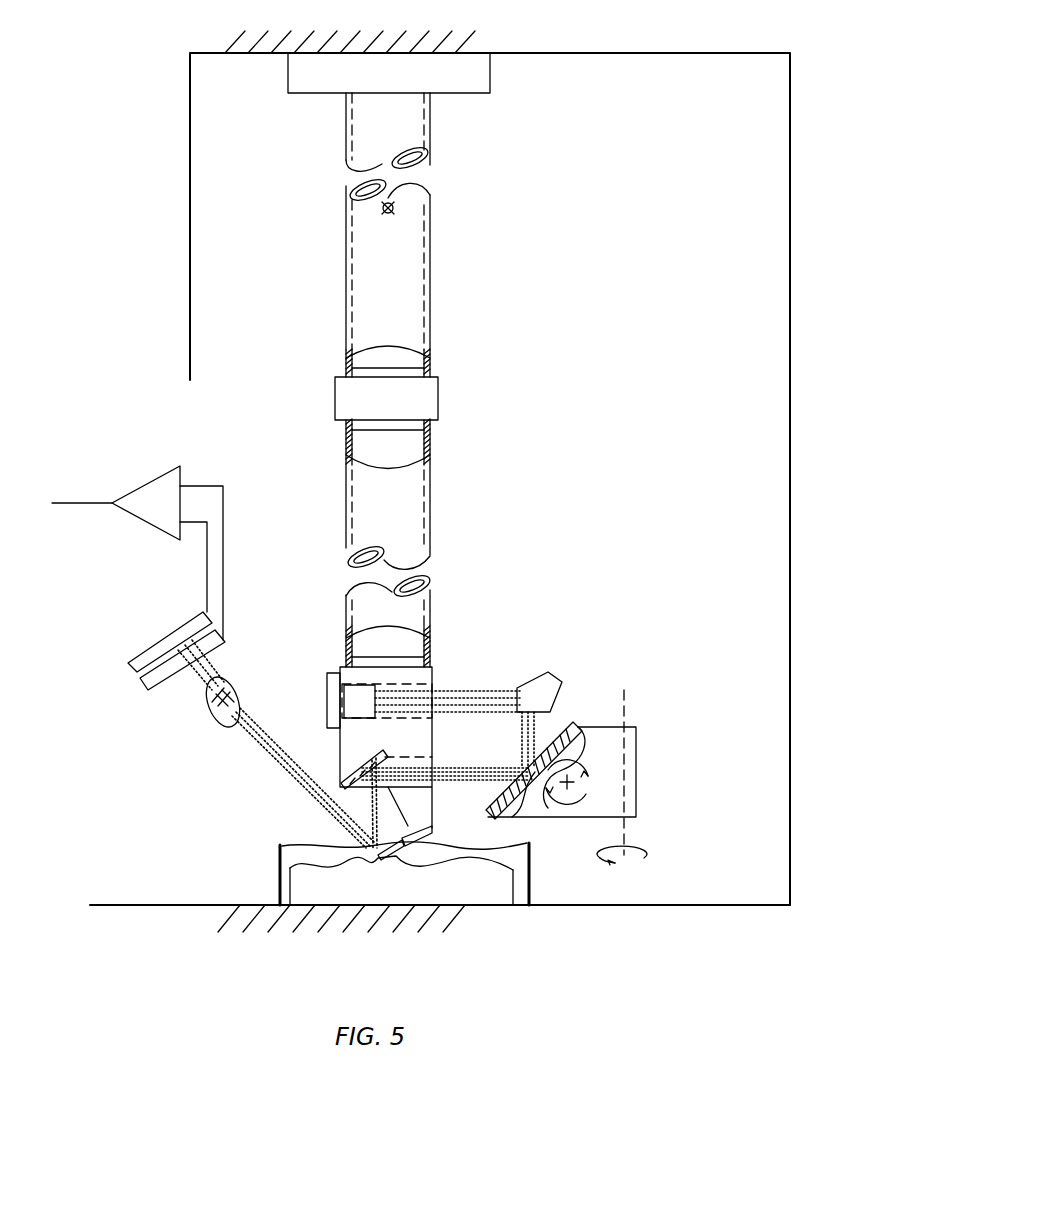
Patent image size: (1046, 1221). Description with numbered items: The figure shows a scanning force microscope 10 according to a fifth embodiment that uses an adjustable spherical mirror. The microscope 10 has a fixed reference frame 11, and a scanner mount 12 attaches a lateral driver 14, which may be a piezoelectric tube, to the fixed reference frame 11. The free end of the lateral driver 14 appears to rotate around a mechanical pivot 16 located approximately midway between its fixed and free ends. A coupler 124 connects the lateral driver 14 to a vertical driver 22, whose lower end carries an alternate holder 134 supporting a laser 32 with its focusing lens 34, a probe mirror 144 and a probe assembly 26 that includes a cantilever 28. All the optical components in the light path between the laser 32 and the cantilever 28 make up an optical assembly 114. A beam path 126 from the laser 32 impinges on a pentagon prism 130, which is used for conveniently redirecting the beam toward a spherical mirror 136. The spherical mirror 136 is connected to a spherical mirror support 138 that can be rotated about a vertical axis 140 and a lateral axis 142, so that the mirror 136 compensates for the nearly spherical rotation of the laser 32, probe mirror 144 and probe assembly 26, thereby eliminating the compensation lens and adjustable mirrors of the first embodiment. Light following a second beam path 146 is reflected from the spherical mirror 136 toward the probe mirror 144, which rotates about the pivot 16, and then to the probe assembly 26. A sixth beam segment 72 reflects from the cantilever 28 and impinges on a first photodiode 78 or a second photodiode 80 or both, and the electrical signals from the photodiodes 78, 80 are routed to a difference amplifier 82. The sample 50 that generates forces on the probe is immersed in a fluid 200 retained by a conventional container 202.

The microscope 10 is at (815, 103).
The fixed reference frame 11 is at (630, 53).
The scanner mount 12 is at (465, 71).
The lateral driver 14 is at (400, 280).
The mechanical pivot 16 is at (395, 205).
The vertical driver 22 is at (375, 511).
The probe assembly 26 is at (430, 838).
The cantilever 28 is at (378, 855).
The laser 32 is at (330, 690).
The focusing lens 34 is at (378, 693).
The sample 50 is at (505, 887).
The sixth beam segment 72 is at (205, 712).
The first photodiode 78 is at (135, 660).
The second photodiode 80 is at (148, 685).
The difference amplifier 82 is at (150, 493).
The optical assembly 114 is at (655, 700).
The coupler 124 is at (425, 398).
The beam path 126 is at (455, 703).
The pentagon prism 130 is at (548, 672).
The alternate holder 134 is at (427, 678).
The spherical mirror 136 is at (575, 727).
The spherical mirror support 138 is at (632, 745).
The vertical axis 140 is at (625, 840).
The lateral axis 142 is at (567, 782).
The probe mirror 144 is at (355, 770).
The second beam path 146 is at (453, 772).
The fluid 200 is at (330, 845).
The container 202 is at (280, 878).